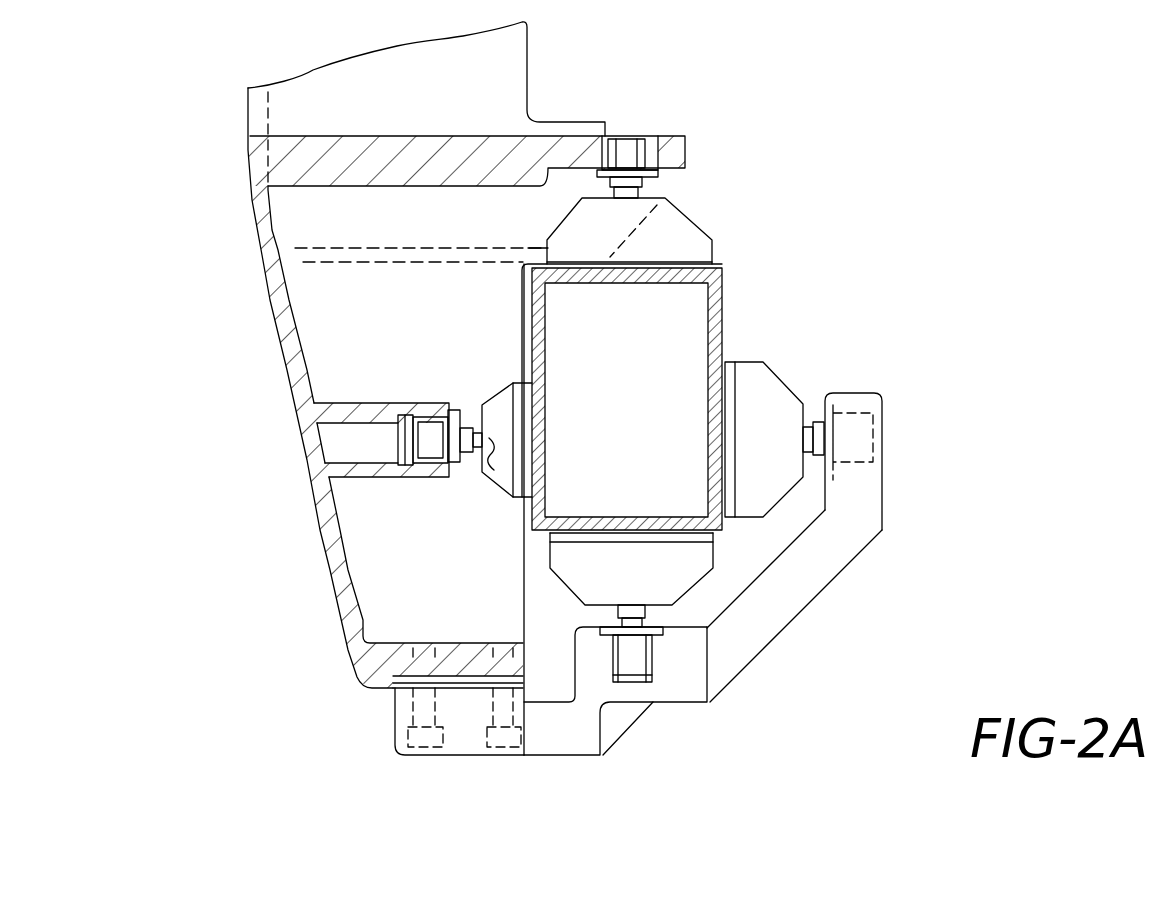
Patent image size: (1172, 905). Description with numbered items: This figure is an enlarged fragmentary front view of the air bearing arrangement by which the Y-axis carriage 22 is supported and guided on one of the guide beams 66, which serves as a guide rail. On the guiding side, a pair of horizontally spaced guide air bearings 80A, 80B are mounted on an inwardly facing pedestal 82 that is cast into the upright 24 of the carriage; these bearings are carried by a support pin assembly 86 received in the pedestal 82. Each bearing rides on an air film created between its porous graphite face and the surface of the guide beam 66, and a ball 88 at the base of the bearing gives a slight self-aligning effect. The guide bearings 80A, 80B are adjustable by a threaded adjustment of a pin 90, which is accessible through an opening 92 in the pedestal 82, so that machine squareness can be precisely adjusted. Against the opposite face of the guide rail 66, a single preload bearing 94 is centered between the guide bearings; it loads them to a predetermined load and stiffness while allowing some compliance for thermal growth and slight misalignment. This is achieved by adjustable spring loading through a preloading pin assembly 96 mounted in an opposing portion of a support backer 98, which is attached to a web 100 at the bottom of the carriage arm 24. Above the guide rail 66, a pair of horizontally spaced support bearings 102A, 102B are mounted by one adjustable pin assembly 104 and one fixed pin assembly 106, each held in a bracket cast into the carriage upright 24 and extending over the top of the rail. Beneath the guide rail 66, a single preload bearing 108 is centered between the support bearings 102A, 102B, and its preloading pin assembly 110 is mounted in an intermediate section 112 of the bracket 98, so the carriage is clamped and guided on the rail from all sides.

The Y-axis carriage 22 is at (242, 180).
The upright 24 is at (280, 398).
The guide beam 66 is at (530, 293).
The guide air bearing 80A is at (493, 393).
The guide air bearing 80B is at (497, 509).
The pedestal 82 is at (320, 395).
The support pin assembly 86 is at (405, 418).
The ball 88 is at (480, 460).
The pin 90 is at (470, 422).
The opening 92 is at (340, 448).
The preload bearing 94 is at (770, 365).
The preloading pin assembly 96 is at (840, 415).
The support backer 98 is at (798, 610).
The web 100 is at (400, 637).
The support bearing 102A is at (683, 213).
The support bearing 102B is at (721, 219).
The adjustable pin assembly 104 is at (660, 145).
The fixed pin assembly 106 is at (689, 121).
The preload bearing 108 is at (562, 587).
The preloading pin assembly 110 is at (608, 668).
The intermediate section 112 is at (813, 673).